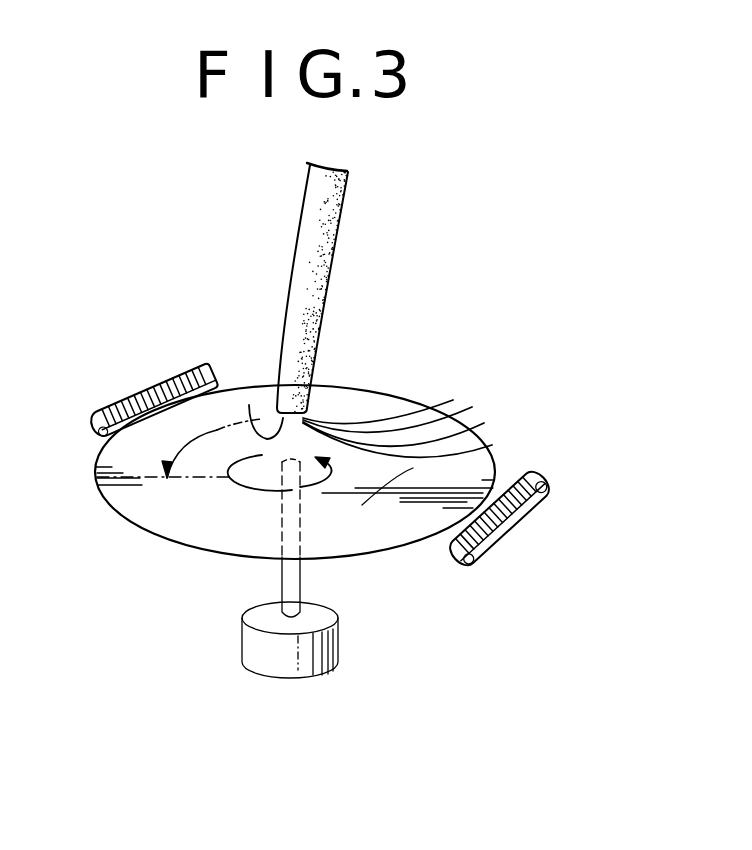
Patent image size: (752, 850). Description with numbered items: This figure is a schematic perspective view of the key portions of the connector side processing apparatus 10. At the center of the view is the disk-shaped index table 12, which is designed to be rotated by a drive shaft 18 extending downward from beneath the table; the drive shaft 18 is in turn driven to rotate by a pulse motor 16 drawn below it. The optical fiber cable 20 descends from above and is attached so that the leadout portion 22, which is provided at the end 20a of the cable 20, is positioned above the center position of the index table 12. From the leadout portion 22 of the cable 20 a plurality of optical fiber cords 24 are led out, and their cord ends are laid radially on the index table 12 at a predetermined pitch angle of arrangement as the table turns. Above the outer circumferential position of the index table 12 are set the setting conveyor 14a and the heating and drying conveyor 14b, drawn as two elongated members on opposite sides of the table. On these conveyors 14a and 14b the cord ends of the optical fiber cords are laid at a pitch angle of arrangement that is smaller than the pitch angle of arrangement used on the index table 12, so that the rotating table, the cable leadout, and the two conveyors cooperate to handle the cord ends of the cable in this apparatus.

The connector side processing apparatus 10 is at (386, 385).
The index table 12 is at (155, 512).
The setting conveyor 14a is at (490, 543).
The heating and drying conveyor 14b is at (122, 398).
The pulse motor 16 is at (337, 632).
The drive shaft 18 is at (282, 577).
The optical fiber cable 20 is at (341, 209).
The end of the optical fiber cable 20a is at (315, 290).
The leadout portion 22 is at (249, 405).
The optical fiber cords 24 is at (472, 423).